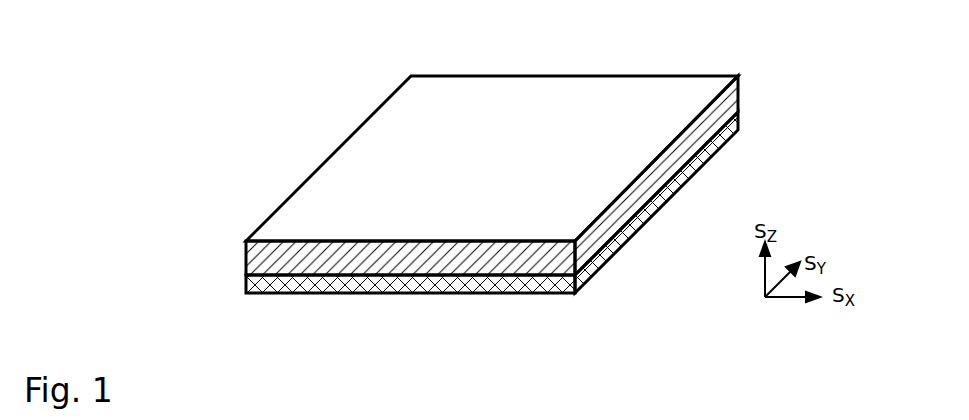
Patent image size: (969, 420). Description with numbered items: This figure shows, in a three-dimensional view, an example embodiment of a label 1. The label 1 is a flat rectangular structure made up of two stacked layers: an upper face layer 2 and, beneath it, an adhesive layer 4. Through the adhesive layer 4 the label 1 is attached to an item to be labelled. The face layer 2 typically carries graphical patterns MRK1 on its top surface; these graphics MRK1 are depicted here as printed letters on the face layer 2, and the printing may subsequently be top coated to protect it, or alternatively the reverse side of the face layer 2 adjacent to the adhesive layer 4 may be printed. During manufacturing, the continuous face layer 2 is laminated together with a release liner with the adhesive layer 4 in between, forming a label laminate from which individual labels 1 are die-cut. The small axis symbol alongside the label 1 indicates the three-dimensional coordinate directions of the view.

The label 1 is at (462, 166).
The face layer 2 is at (246, 255).
The adhesive layer 4 is at (246, 290).
The graphics MRK1 is at (403, 152).